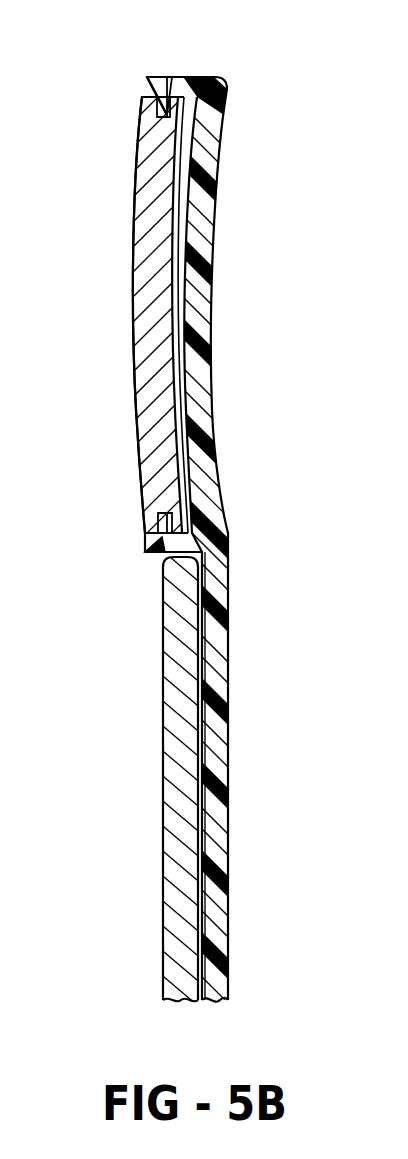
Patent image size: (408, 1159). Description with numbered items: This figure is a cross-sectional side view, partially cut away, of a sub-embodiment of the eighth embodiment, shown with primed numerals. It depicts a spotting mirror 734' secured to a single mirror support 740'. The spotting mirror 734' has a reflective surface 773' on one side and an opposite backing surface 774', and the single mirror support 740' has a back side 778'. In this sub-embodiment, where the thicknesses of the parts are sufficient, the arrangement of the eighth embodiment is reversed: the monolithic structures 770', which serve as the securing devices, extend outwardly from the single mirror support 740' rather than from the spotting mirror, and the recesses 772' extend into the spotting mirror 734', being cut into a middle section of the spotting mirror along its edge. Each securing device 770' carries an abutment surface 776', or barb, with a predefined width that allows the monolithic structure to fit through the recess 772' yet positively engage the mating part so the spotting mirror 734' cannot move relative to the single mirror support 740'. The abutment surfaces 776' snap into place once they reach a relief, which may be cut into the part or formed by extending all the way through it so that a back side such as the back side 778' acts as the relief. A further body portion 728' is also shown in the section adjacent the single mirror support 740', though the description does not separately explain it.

The second body portion 728' is at (142, 790).
The spotting mirror 734' is at (131, 332).
The single mirror support 740' is at (231, 565).
The securing device 770' is at (105, 352).
The recess 772' is at (116, 307).
The reflective surface 773' is at (98, 315).
The backing surface 774' is at (217, 315).
The abutment surface 776' is at (118, 278).
The back side 778' is at (227, 501).